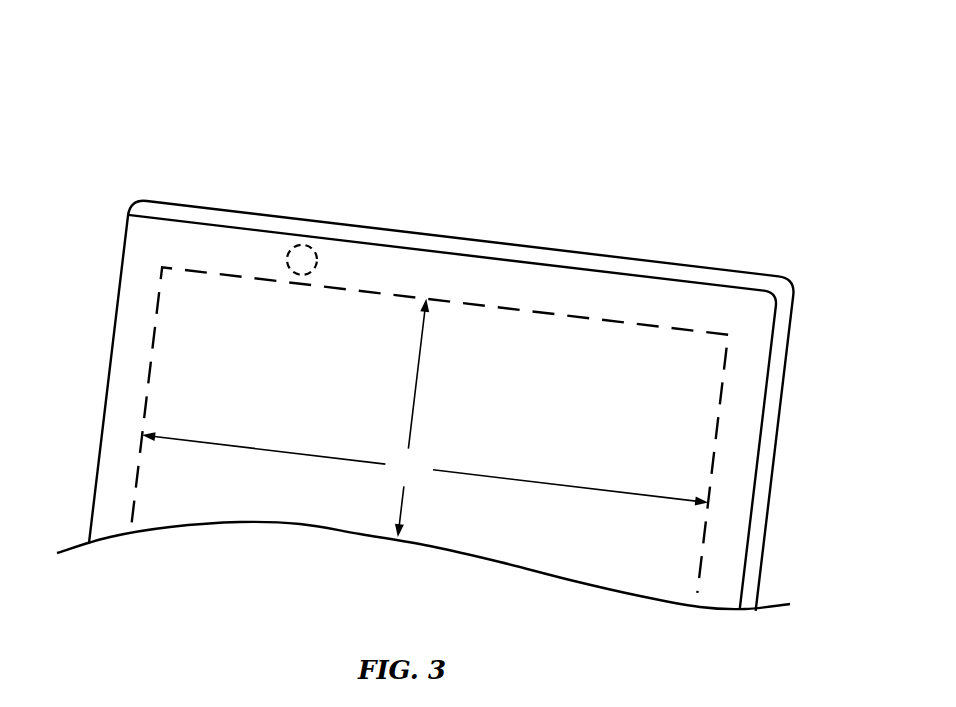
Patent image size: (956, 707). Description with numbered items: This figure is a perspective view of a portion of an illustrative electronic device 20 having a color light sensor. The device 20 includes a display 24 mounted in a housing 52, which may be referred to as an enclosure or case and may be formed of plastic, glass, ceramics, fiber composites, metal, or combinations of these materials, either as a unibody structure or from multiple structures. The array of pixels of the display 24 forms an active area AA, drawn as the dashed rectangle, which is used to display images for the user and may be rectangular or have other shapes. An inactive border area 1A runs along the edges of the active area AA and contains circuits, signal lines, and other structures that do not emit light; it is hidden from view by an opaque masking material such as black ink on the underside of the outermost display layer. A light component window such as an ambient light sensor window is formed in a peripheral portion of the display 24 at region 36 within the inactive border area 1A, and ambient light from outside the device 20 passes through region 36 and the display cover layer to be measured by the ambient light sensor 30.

The device 20 is at (618, 84).
The housing 52 is at (442, 411).
The display 24 is at (429, 430).
The ambient light sensor 30 is at (301, 259).
The region 36 is at (287, 262).
The inactive border area 1A is at (122, 372).
The active area AA is at (431, 420).